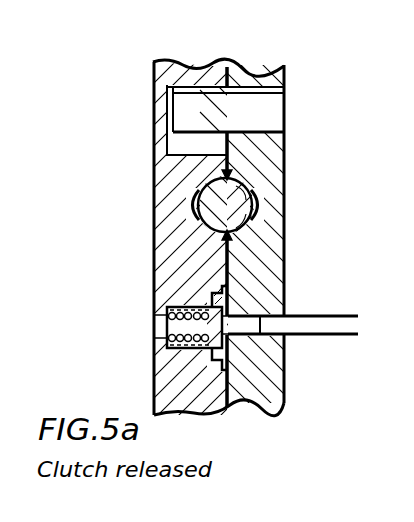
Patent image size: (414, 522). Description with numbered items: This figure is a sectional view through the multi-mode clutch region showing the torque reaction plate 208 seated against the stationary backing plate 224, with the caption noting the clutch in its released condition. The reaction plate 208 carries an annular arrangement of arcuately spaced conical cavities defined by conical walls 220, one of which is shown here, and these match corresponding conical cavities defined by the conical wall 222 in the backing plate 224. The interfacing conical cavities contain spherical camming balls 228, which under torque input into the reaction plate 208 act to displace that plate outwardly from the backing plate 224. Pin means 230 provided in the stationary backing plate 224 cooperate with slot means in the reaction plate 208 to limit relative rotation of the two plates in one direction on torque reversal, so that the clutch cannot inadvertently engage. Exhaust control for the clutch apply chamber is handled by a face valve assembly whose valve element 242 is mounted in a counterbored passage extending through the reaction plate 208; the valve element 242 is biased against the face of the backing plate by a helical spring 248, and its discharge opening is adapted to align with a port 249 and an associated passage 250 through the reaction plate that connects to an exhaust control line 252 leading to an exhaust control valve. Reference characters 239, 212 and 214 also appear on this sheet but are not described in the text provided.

The reaction plate 208 is at (176, 176).
The backing plate 224 is at (283, 402).
The pin means 230 is at (250, 117).
The cavity 239 is at (195, 156).
The conical walls 220 is at (241, 184).
The spherical camming balls 228 is at (233, 203).
The conical wall 222 is at (262, 212).
The valve element 242 is at (160, 262).
The helical spring 248 is at (163, 305).
The port 249 is at (235, 306).
The passage 250 is at (247, 329).
The exhaust control line 252 is at (293, 324).
The element 212 is at (29, 4).
The element 214 is at (96, 4).